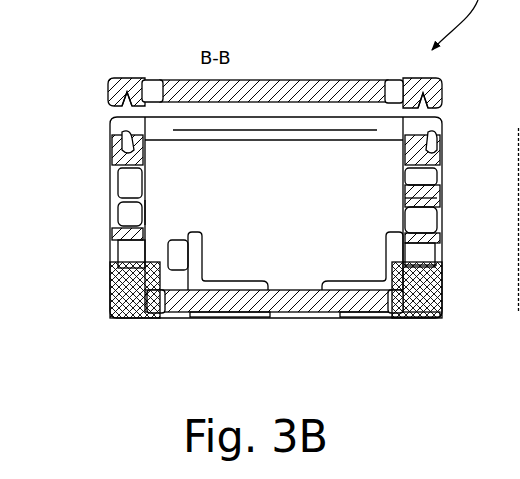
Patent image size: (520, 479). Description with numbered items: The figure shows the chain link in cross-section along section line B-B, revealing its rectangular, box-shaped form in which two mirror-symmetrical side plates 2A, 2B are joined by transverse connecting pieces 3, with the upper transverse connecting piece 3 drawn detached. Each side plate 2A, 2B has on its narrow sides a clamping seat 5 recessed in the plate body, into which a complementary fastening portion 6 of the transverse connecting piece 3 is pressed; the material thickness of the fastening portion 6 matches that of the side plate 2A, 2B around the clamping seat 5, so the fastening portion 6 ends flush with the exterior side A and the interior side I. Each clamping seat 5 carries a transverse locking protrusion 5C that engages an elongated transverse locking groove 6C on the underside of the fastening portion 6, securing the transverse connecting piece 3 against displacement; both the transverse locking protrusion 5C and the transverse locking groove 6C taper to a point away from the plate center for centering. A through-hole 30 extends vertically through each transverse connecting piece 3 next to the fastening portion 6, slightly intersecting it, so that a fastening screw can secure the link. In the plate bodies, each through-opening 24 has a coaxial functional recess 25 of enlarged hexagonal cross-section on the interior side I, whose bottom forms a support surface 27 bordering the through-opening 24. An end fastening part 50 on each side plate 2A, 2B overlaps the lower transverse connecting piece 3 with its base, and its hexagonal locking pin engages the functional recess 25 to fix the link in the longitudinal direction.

The transverse connecting piece 3 is at (295, 80).
The fastening portion 6 is at (126, 78).
The transverse locking groove 6C is at (126, 100).
The through-hole 30 is at (155, 78).
The side plate 2A is at (518, 238).
The side plate 2B is at (425, 305).
The clamping seat 5 is at (120, 127).
The transverse locking protrusion 5C is at (120, 152).
The through-opening 24 is at (115, 186).
The functional recess 25 is at (148, 186).
The support surface 27 is at (420, 200).
The end fastening part 50 is at (222, 284).
The exterior side A is at (108, 218).
The interior side I is at (150, 212).